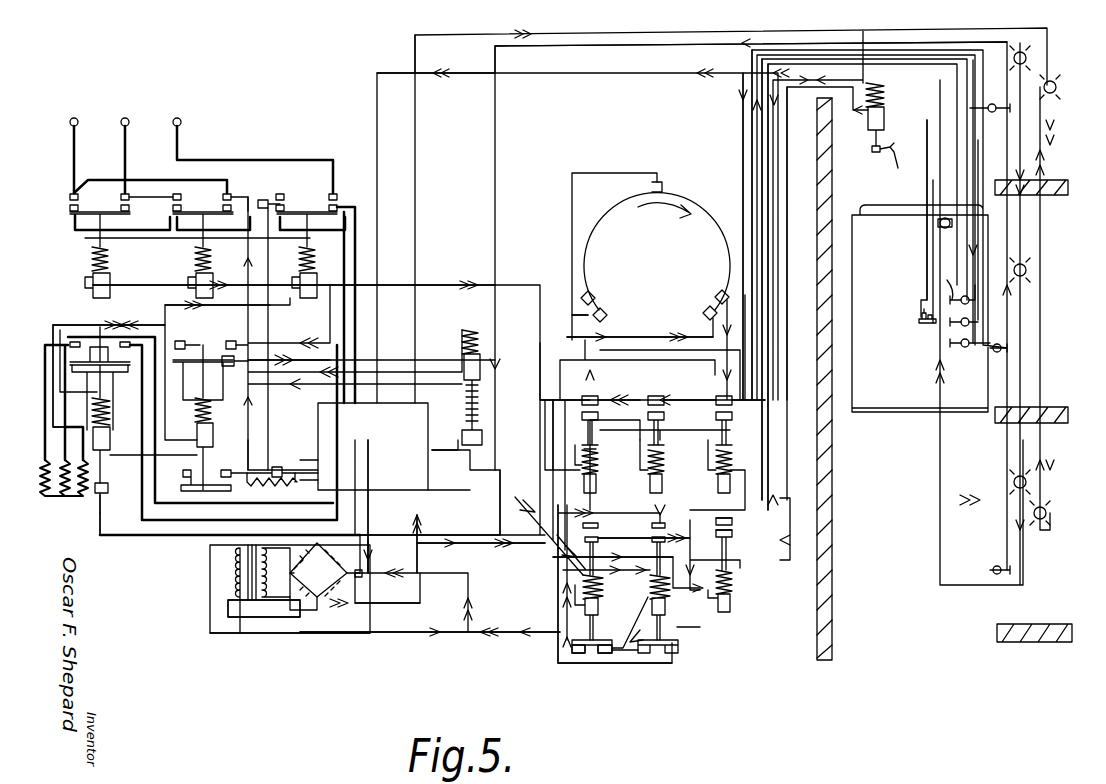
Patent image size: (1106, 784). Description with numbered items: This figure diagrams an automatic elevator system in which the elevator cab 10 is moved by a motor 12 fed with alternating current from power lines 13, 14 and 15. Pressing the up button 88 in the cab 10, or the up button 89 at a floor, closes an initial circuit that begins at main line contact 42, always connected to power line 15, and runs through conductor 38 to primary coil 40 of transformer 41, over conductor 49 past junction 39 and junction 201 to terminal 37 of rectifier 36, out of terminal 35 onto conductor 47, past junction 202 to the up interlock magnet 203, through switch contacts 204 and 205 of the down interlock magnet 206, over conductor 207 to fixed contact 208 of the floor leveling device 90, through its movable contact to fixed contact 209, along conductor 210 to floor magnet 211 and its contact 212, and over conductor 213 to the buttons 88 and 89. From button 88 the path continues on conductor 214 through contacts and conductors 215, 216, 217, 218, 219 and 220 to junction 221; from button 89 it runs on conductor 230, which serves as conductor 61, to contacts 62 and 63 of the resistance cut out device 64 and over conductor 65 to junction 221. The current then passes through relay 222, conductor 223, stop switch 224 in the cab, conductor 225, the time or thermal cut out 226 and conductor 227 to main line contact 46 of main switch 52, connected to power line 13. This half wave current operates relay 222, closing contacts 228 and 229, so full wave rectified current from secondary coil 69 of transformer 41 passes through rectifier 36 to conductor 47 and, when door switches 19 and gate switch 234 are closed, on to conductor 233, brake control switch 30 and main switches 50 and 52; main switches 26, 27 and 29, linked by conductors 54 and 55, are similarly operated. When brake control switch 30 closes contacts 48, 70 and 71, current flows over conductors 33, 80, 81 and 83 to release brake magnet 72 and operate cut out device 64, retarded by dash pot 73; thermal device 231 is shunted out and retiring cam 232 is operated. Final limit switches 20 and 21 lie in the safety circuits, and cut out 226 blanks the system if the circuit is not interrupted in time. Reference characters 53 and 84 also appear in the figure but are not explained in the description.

The elevator cab 10 is at (880, 405).
The motor 12 is at (430, 424).
The power line 13 is at (72, 130).
The power line 14 is at (124, 130).
The power line 15 is at (176, 130).
The door switch 19 is at (1027, 56).
The final limit switch 20 is at (1057, 87).
The final limit switch 21 is at (1047, 513).
The main switch 26 is at (92, 258).
The up switch 27 is at (196, 258).
The potential switch 29 is at (300, 258).
The brake control switch 30 is at (214, 420).
The conductor 33 is at (268, 361).
The rectifier terminal 35 is at (292, 570).
The rectifier 36 is at (325, 572).
The rectifier terminal 37 is at (362, 576).
The conductor 38 is at (356, 206).
The junction 39 is at (372, 568).
The primary coil 40 is at (237, 589).
The transformer 41 is at (245, 610).
The main line contact 42 is at (338, 190).
The main line contact 46 is at (232, 195).
The conductor 47 is at (463, 37).
The contact 48 is at (226, 345).
The conductor 49 is at (210, 590).
The main switch 50 is at (300, 210).
The main switch 52 is at (199, 210).
The switch contact bar 53 is at (92, 210).
The conductor 54 is at (220, 290).
The conductor 55 is at (228, 240).
The conductor 61 is at (125, 538).
The contact 62 is at (100, 498).
The contact 63 is at (112, 480).
The resistance cut out device 64 is at (38, 425).
The conductor 65 is at (165, 456).
The secondary coil 69 is at (277, 570).
The contact 70 is at (182, 362).
The contact 71 is at (182, 340).
The brake magnet 72 is at (472, 335).
The dash pot 73 is at (93, 366).
The conductor 80 is at (258, 343).
The conductor 81 is at (52, 325).
The conductor 83 is at (78, 320).
The relay coil 84 is at (93, 403).
The up button 88 is at (973, 418).
The up button 89 is at (992, 103).
The floor leveling device 90 is at (657, 217).
The junction 201 is at (468, 640).
The junction 202 is at (425, 548).
The up interlock magnet 203 is at (665, 610).
The switch contact 204 is at (606, 658).
The switch contact 205 is at (577, 658).
The down interlock magnet 206 is at (585, 600).
The conductor 207 is at (644, 337).
The floor leveler fixed contact 208 is at (708, 310).
The floor leveler fixed contact 209 is at (720, 296).
The conductor 210 is at (730, 395).
The floor magnet 211 is at (597, 470).
The contact 212 is at (598, 414).
The conductor 213 is at (748, 156).
The conductor 214 is at (740, 130).
The contact or conductor 215 is at (728, 392).
The contact or conductor 216 is at (690, 393).
The contact or conductor 217 is at (654, 395).
The contact or conductor 218 is at (618, 396).
The contact or conductor 219 is at (594, 391).
The contact or conductor 220 is at (528, 395).
The junction 221 is at (522, 450).
The relay 222 is at (732, 590).
The conductor 223 is at (378, 313).
The stop switch 224 is at (924, 325).
The conductor 225 is at (500, 490).
The time or thermal cut out 226 is at (249, 472).
The conductor 227 is at (250, 448).
The contact 228 is at (732, 522).
The contact 229 is at (733, 536).
The conductor 230 is at (644, 45).
The thermal device 231 is at (258, 486).
The retiring cam 232 is at (885, 118).
The conductor 233 is at (458, 79).
The gate switch 234 is at (938, 220).